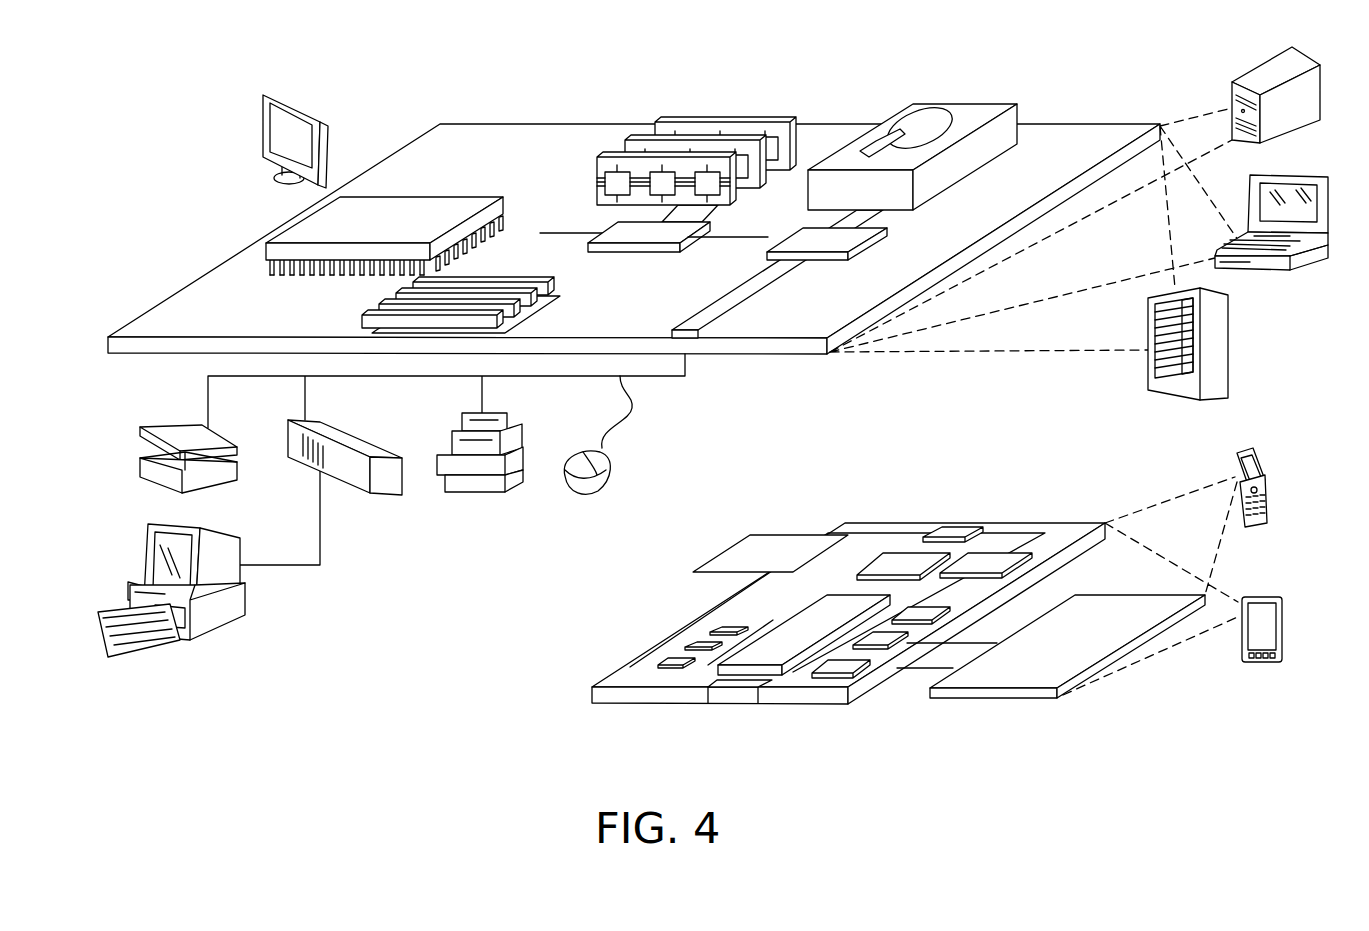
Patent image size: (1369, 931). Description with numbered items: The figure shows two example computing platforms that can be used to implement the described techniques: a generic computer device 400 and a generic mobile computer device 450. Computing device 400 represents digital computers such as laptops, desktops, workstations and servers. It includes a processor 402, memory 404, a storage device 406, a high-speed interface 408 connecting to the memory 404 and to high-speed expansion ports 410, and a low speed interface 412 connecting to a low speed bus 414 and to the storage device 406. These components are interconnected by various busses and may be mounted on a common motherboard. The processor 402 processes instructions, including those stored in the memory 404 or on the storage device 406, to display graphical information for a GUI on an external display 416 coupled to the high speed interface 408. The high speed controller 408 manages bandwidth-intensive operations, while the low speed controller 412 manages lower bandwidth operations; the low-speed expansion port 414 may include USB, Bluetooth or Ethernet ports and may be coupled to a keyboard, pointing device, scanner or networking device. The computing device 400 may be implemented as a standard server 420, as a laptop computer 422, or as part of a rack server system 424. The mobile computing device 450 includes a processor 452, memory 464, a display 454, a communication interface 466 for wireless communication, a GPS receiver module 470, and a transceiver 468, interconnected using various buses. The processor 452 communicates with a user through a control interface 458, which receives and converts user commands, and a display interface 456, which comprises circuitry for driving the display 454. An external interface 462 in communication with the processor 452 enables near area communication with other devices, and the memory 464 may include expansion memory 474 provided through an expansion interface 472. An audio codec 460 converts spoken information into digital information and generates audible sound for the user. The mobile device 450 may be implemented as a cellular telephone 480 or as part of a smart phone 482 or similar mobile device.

The generic computer device 400 is at (395, 78).
The processor 402 is at (297, 226).
The memory 404 is at (728, 118).
The storage device 406 is at (951, 102).
The high-speed interface 408 is at (662, 234).
The high-speed expansion ports 410 is at (387, 300).
The low speed interface 412 is at (802, 237).
The low speed bus 414 is at (688, 328).
The display 416 is at (265, 95).
The standard server 420 is at (1252, 75).
The laptop computer 422 is at (1306, 175).
The rack server system 424 is at (1228, 344).
The generic mobile computer device 450 is at (555, 708).
The processor 452 is at (773, 638).
The display 454 is at (1105, 610).
The display interface 456 is at (848, 664).
The control interface 458 is at (888, 640).
The audio codec 460 is at (926, 607).
The external interface 462 is at (735, 690).
The memory 464 is at (693, 645).
The communication interface 466 is at (902, 555).
The transceiver 468 is at (993, 558).
The GPS receiver module 470 is at (955, 533).
The expansion interface 472 is at (828, 533).
The expansion memory 474 is at (750, 535).
The cellular telephone 480 is at (1245, 450).
The smart phone 482 is at (1260, 597).